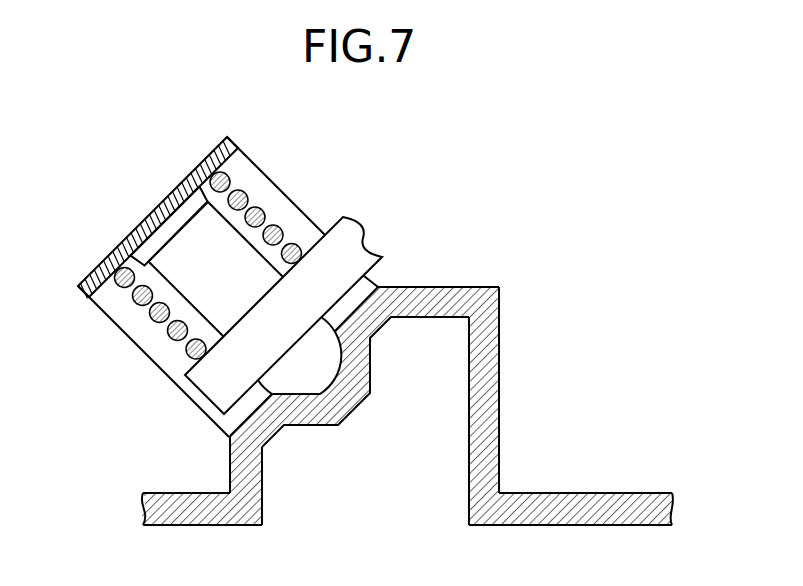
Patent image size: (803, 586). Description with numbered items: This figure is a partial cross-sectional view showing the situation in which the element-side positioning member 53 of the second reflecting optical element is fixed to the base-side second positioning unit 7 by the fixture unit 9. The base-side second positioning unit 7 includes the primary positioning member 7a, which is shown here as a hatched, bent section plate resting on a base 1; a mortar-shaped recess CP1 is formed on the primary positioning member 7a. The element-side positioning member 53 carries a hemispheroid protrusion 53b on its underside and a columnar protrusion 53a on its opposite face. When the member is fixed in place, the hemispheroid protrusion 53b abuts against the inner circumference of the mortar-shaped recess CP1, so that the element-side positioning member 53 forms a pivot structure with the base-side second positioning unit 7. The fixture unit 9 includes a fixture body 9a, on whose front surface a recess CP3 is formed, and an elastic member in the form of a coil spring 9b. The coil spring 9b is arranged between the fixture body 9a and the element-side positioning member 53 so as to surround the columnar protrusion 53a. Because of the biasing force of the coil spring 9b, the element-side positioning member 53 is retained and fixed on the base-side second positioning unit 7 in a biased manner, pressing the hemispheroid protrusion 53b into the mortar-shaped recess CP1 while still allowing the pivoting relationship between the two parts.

The base plate 1 is at (631, 492).
The base-side second positioning unit 7 is at (464, 287).
The primary positioning member 7a is at (414, 287).
The fixture unit 9 is at (177, 267).
The fixture body 9a is at (224, 149).
The coil spring 9b is at (266, 208).
The element-side positioning member 53 is at (290, 330).
The columnar protrusion 53a is at (208, 288).
The hemispheroid protrusion 53b is at (294, 378).
The mortar-shaped recess CP1 is at (334, 390).
The recess CP3 is at (150, 221).